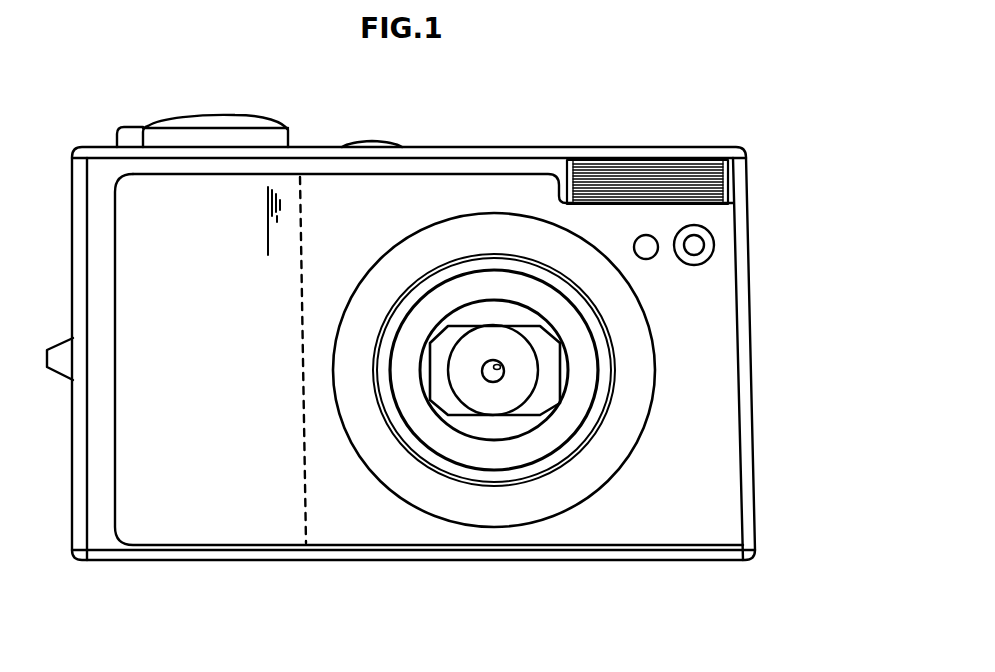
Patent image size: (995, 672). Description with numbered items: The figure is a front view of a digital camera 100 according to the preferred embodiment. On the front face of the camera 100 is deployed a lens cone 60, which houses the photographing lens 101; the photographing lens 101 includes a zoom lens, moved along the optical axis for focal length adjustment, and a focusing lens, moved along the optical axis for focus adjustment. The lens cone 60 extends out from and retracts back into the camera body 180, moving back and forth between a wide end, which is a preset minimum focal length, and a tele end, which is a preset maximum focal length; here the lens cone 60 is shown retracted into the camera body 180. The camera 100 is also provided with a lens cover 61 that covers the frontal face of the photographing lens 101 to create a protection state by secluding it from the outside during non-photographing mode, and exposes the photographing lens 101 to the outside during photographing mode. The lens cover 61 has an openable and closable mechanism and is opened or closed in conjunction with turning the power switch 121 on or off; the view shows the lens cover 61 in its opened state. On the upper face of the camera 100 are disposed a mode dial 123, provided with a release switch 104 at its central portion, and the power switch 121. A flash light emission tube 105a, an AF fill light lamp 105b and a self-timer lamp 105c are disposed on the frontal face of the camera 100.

The digital camera 100 is at (707, 570).
The photographing lens 101 is at (493, 345).
The release switch 104 is at (213, 118).
The flash light emission tube 105a is at (728, 178).
The AF fill light lamp 105b is at (712, 246).
The self-timer lamp 105c is at (650, 257).
The power switch 121 is at (373, 141).
The mode dial 123 is at (128, 133).
The camera body 180 is at (273, 561).
The lens cone 60 is at (515, 457).
The lens cover 61 is at (488, 430).